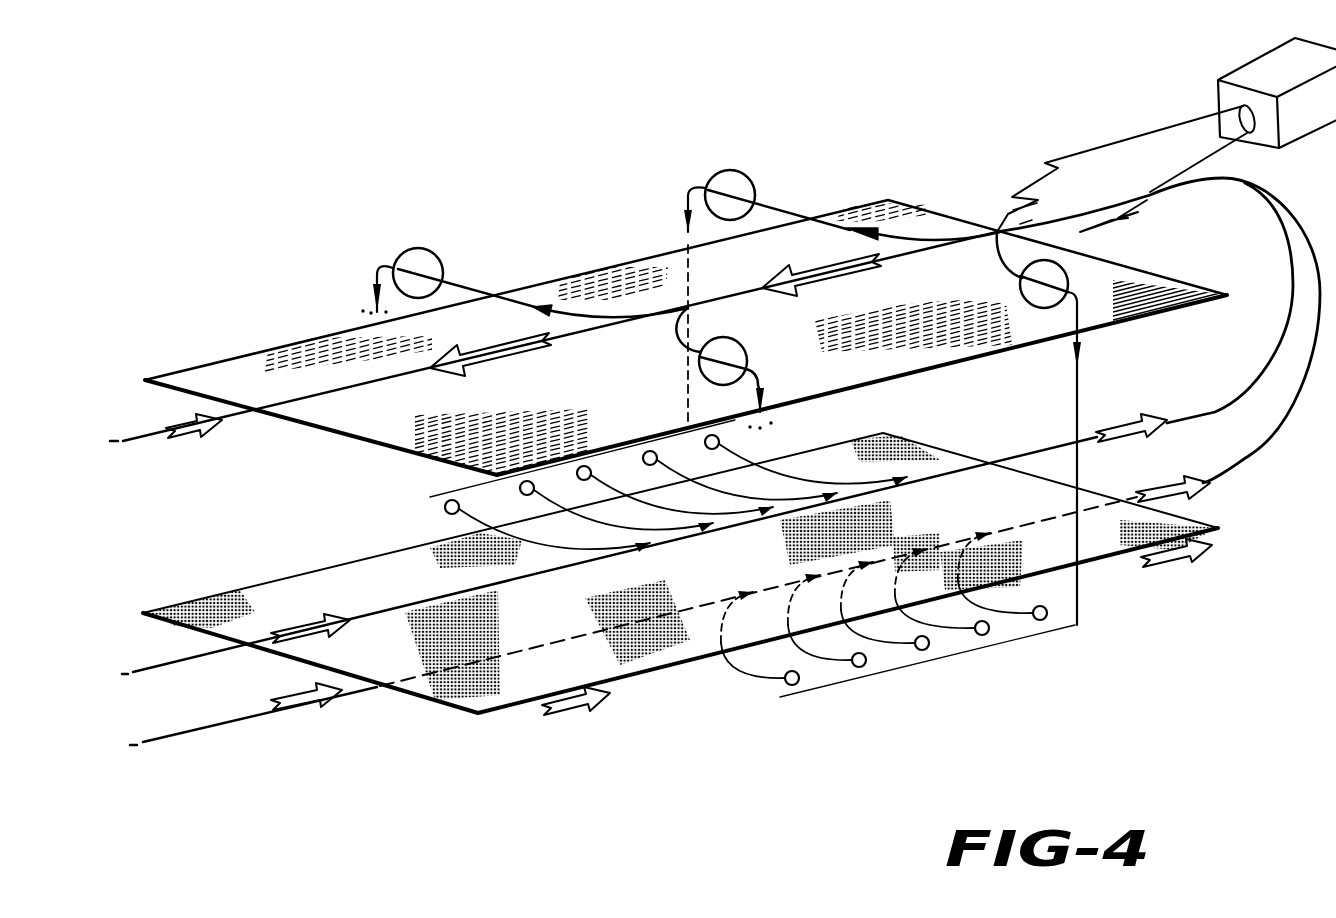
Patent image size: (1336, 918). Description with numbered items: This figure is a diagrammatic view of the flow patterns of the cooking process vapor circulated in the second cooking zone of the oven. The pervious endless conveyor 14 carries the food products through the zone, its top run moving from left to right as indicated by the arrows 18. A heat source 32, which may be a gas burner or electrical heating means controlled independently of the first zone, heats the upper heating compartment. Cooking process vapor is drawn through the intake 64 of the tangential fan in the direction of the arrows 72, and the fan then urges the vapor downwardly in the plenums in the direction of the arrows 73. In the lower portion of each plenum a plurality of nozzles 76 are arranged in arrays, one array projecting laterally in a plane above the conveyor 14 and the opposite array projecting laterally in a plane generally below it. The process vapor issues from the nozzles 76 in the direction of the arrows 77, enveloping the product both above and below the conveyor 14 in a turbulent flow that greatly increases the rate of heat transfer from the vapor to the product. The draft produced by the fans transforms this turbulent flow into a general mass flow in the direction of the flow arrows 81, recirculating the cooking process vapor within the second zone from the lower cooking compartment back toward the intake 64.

The endless conveyor 14 is at (295, 577).
The arrows 18 is at (568, 712).
The heat source 32 is at (1265, 68).
The intake 64 is at (426, 250).
The arrows 72 is at (907, 233).
The arrows 73 is at (372, 300).
The nozzles 76 is at (705, 445).
The arrows 77 is at (565, 478).
The flow arrows 81 is at (168, 425).